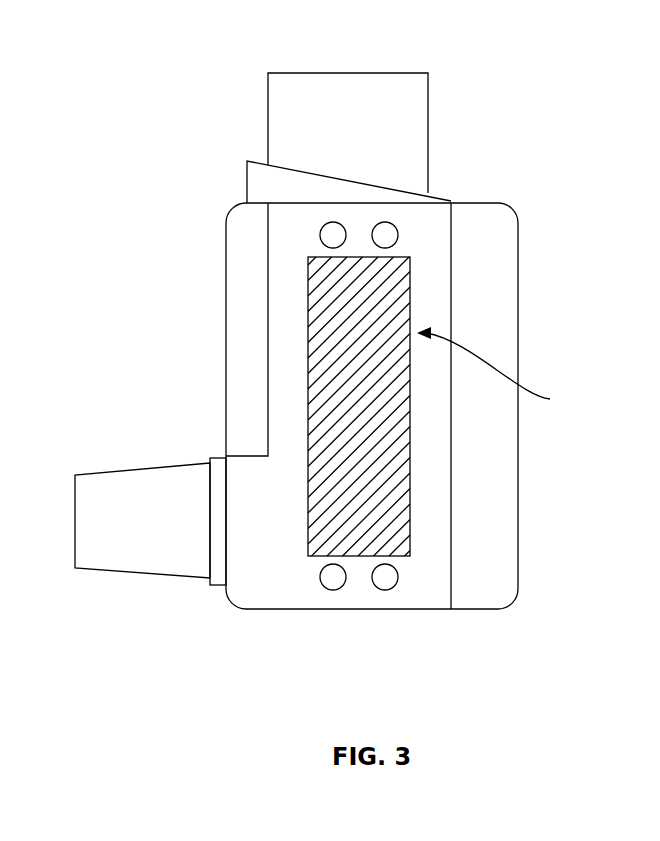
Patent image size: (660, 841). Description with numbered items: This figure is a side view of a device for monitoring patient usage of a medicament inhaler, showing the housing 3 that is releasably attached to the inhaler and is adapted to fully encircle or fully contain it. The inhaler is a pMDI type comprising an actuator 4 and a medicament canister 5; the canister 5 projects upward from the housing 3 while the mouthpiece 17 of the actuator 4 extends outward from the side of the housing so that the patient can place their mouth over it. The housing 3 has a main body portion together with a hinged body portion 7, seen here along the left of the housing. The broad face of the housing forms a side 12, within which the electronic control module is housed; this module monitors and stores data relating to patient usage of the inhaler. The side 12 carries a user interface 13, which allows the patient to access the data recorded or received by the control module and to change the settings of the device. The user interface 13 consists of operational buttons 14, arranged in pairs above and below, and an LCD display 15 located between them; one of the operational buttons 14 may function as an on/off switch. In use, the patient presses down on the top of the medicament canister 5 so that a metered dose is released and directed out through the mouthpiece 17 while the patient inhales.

The housing 3 is at (512, 256).
The actuator 4 is at (256, 186).
The medicament canister 5 is at (416, 152).
The hinged body portion 7 is at (240, 355).
The side 12 is at (422, 410).
The user interface 13 is at (499, 369).
The operational buttons 14 is at (388, 235).
The LCD display 15 is at (390, 464).
The mouthpiece 17 is at (122, 555).